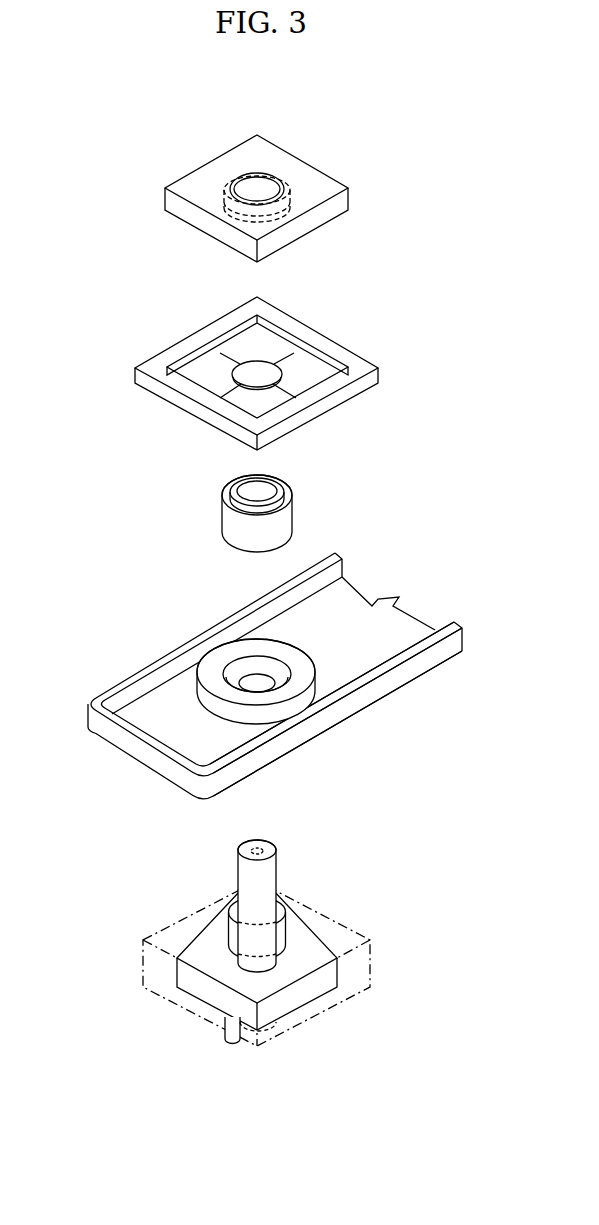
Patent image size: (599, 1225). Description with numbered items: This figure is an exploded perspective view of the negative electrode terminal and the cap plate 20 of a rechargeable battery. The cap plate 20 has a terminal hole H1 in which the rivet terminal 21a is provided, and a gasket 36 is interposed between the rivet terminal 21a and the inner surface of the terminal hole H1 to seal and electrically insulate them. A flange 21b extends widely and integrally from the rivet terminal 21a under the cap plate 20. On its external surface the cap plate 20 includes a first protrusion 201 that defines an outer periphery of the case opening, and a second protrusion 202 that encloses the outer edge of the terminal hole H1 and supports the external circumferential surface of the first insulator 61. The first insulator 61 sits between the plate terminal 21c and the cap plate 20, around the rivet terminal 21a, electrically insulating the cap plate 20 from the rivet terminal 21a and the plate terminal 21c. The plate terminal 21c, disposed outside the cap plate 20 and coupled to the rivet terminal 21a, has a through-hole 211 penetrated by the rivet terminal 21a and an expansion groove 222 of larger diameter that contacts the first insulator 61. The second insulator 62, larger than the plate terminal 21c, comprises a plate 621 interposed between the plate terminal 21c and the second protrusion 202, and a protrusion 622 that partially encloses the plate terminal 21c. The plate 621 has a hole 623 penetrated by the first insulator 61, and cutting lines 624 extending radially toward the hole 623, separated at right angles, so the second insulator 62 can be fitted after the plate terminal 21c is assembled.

The cap plate 20 is at (292, 653).
The first protrusion 201 is at (423, 648).
The second protrusion 202 is at (211, 656).
The terminal hole H1 is at (199, 656).
The first insulator 61 is at (210, 510).
The second insulator 62 is at (231, 361).
The plate 621 is at (200, 366).
The protrusion 622 is at (180, 385).
The hole 623 is at (257, 363).
The cutting lines 624 is at (307, 365).
The plate terminal 21c is at (237, 178).
The through-hole 211 is at (259, 177).
The expansion groove 222 is at (287, 189).
The rivet terminal 21a is at (238, 872).
The flange 21b is at (315, 988).
The gasket 36 is at (372, 963).